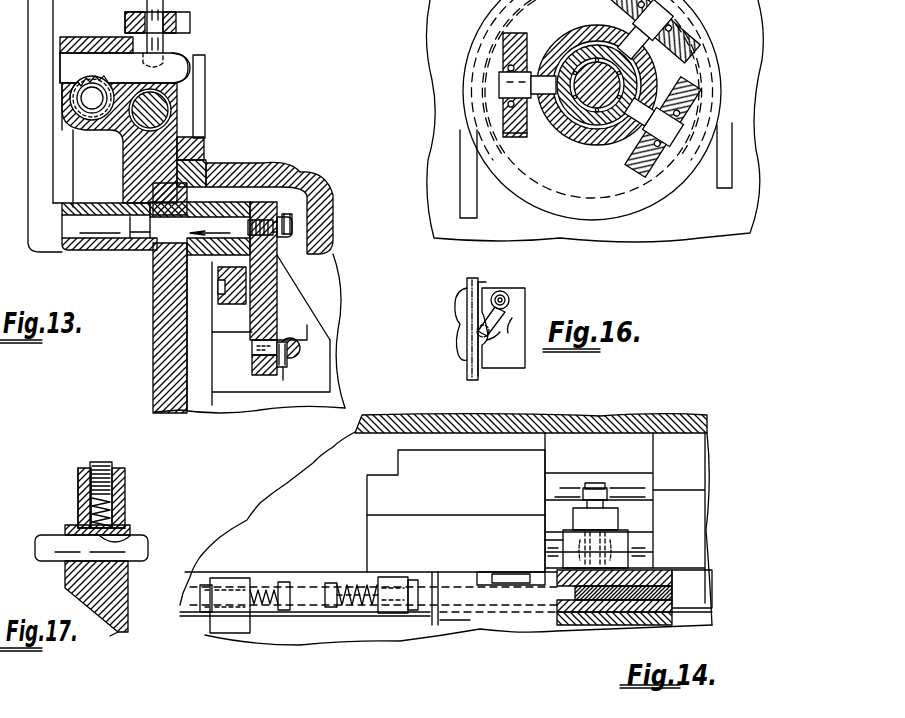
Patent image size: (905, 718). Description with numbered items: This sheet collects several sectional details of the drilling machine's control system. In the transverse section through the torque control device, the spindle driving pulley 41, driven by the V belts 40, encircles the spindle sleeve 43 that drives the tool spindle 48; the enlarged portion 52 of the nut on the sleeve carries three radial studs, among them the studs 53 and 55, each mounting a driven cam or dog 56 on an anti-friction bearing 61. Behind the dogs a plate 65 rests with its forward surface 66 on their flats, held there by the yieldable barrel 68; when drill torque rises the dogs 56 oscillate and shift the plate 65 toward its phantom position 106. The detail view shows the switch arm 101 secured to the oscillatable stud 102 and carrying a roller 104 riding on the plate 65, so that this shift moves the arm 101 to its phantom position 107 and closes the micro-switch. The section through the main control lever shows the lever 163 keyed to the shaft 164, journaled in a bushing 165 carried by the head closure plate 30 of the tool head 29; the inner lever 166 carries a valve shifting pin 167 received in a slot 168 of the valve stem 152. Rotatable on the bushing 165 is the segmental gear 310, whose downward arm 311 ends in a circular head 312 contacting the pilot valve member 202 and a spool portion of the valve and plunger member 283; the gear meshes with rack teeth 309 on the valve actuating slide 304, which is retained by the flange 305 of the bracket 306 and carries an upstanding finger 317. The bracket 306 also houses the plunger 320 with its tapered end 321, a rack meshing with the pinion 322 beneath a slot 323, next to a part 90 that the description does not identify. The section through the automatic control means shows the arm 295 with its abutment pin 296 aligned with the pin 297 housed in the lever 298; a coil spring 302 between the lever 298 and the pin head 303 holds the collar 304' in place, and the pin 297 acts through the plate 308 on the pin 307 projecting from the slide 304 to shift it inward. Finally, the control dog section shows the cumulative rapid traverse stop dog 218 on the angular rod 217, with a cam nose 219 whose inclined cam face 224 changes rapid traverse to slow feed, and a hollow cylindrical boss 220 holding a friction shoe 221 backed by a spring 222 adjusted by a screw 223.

In FIG. 13, the plate 90 is at (86, 108).
In FIG. 13, the plunger 320 is at (84, 62).
In FIG. 13, the cone or tapered end 321 is at (172, 47).
In FIG. 13, the slot 323 is at (172, 40).
In FIG. 13, the finger 317 is at (203, 90).
In FIG. 14, the finger 317 is at (507, 573).
In FIG. 13, the bracket 306 is at (130, 180).
In FIG. 13, the pinion 322 is at (96, 112).
In FIG. 13, the rod or bar 217 is at (168, 114).
In FIG. 17, the rod or bar 217 is at (133, 538).
In FIG. 13, the flange 305 is at (205, 148).
In FIG. 13, the rack teeth 309 is at (210, 183).
In FIG. 13, the segmental gear 310 is at (254, 174).
In FIG. 13, the lever 163 is at (40, 250).
In FIG. 13, the shaft 164 is at (125, 252).
In FIG. 13, the bushing 165 is at (164, 248).
In FIG. 13, the pilot valve member 202 is at (215, 296).
In FIG. 14, the pilot valve member 202 is at (553, 540).
In FIG. 13, the lever 166 is at (268, 288).
In FIG. 14, the lever 166 is at (610, 524).
In FIG. 13, the slot 168 is at (303, 353).
In FIG. 13, the circular head 312 is at (235, 306).
In FIG. 13, the arm 311 is at (235, 275).
In FIG. 14, the arm 311 is at (620, 563).
In FIG. 13, the stem 152 is at (294, 366).
In FIG. 14, the stem 152 is at (566, 478).
In FIG. 13, the valve shifting pin 167 is at (283, 367).
In FIG. 14, the valve shifting pin 167 is at (612, 487).
In FIG. 12, the spindle driving pulley 41 is at (546, 200).
In FIG. 12, the V belts 40 is at (471, 215).
In FIG. 12, the tool spindle 48 is at (646, 68).
In FIG. 12, the enlarged portion of nut 52 is at (572, 128).
In FIG. 16, the enlarged portion of nut 52 is at (460, 323).
In FIG. 12, the spindle sleeve 43 is at (617, 132).
In FIG. 12, the stud 53 is at (505, 88).
In FIG. 12, the anti-friction bearing 61 is at (516, 136).
In FIG. 12, the driven cam or dog 56 is at (530, 18).
In FIG. 12, the stud 55 is at (680, 163).
In FIG. 16, the plate 65 is at (472, 380).
In FIG. 16, the forward surface 66 is at (467, 373).
In FIG. 16, the cylindrical member or barrel 68 is at (512, 369).
In FIG. 16, the oscillatable stud 102 is at (512, 296).
In FIG. 16, the roller 104 is at (482, 331).
In FIG. 16, the phantom line position 107 is at (513, 320).
In FIG. 16, the arm 101 is at (508, 332).
In FIG. 16, the phantom line position 106 is at (474, 282).
In FIG. 17, the cumulative rapid traverse stop dog 218 is at (66, 528).
In FIG. 17, the cylindrical boss 220 is at (118, 500).
In FIG. 17, the spring 222 is at (82, 504).
In FIG. 17, the screw 223 is at (108, 464).
In FIG. 17, the friction shoe 221 is at (130, 538).
In FIG. 17, the cam shaped nose 219 is at (122, 616).
In FIG. 17, the inclined cam face 224 is at (100, 629).
In FIG. 14, the tool head 29 is at (668, 407).
In FIG. 14, the spool type valve and plunger member 283 is at (648, 540).
In FIG. 14, the valve actuating slide 304 is at (435, 593).
In FIG. 14, the collar 304' is at (428, 568).
In FIG. 14, the head closure plate 30 is at (703, 599).
In FIG. 14, the arm 295 is at (217, 627).
In FIG. 14, the abutment pin 296 is at (270, 588).
In FIG. 14, the head 303 is at (326, 600).
In FIG. 14, the coil spring 302 is at (353, 585).
In FIG. 14, the pin 297 is at (376, 601).
In FIG. 14, the lever or arm 298 is at (390, 585).
In FIG. 14, the plate 308 is at (435, 612).
In FIG. 14, the pin 307 is at (450, 621).